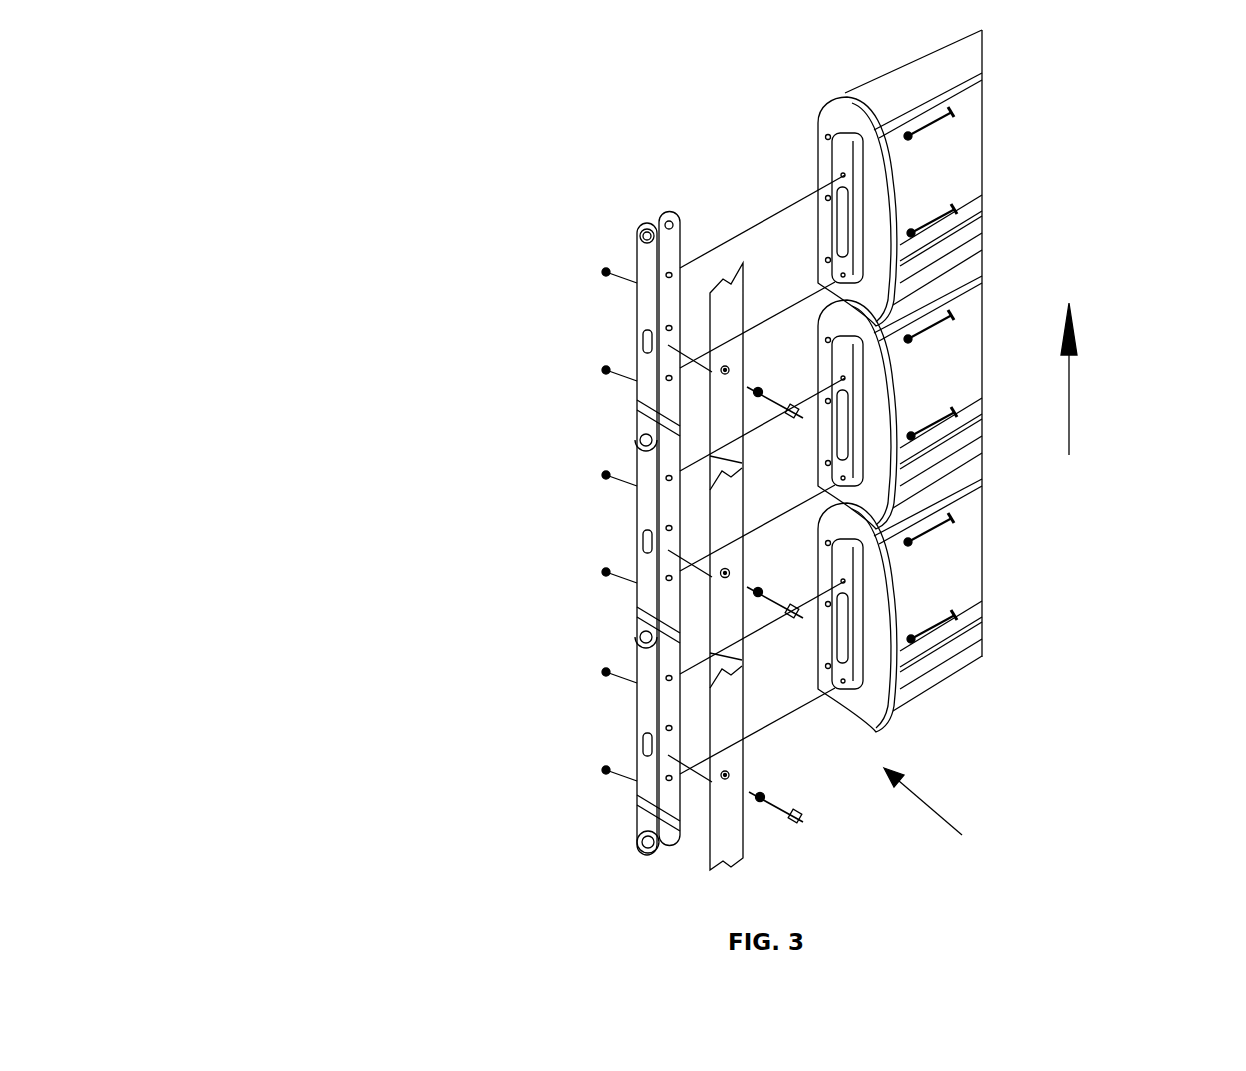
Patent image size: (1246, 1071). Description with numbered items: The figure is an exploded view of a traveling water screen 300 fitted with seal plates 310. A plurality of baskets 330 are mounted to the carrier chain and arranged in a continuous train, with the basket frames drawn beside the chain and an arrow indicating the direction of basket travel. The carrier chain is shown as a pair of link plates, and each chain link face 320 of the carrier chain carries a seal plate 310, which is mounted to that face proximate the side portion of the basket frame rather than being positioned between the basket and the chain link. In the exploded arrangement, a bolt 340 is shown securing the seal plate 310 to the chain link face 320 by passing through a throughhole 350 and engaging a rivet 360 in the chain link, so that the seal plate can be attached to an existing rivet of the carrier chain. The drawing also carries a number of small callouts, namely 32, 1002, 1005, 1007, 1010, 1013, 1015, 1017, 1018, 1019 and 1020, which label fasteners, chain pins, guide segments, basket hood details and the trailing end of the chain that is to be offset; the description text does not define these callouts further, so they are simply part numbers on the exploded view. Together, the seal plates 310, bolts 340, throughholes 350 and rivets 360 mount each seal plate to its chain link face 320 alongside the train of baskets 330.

The basket conveyor assembly 300 is at (484, 218).
The seal plate 310 is at (735, 609).
The chain link face 320 is at (652, 515).
The baskets 330 is at (872, 607).
The bolt 340 is at (732, 571).
The throughhole 350 is at (720, 576).
The rivet 360 is at (657, 533).
The basket hood 32 is at (817, 165).
The trailing end of chain 1002 is at (640, 822).
The guide rail segment 1005 is at (745, 303).
The chain pin 1007 is at (638, 240).
The bolt 1010 is at (604, 275).
The nut 1013 is at (957, 208).
The bolt 1015 is at (604, 570).
The bolt 1017 is at (913, 229).
The nut 1018 is at (791, 416).
The nut 1019 is at (798, 812).
The bolt 1020 is at (761, 388).